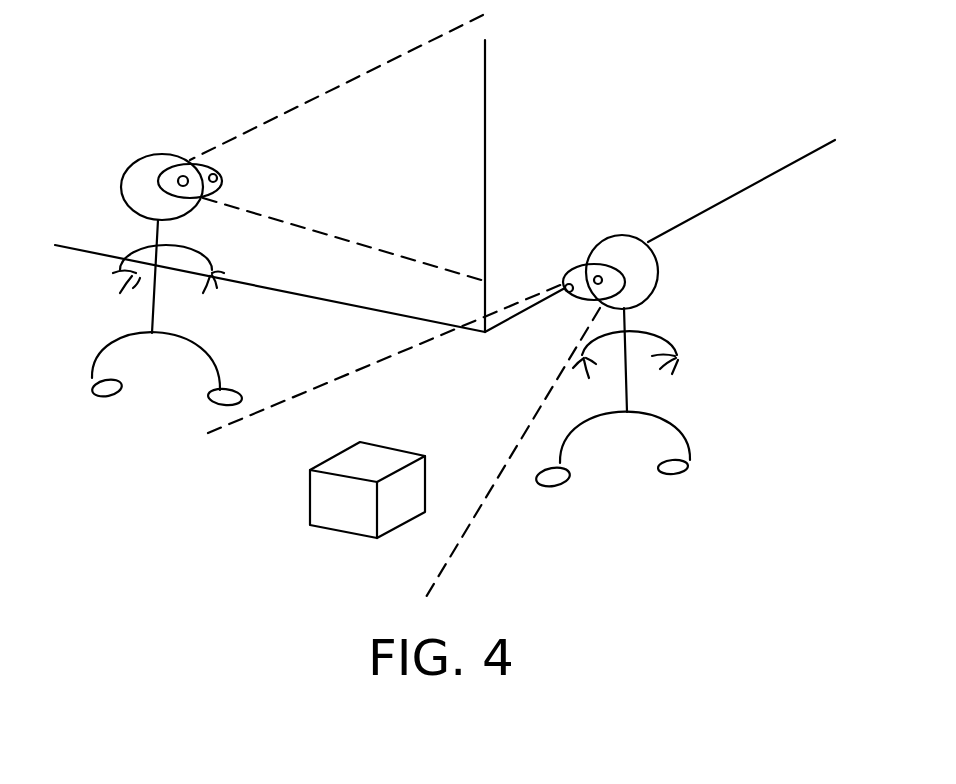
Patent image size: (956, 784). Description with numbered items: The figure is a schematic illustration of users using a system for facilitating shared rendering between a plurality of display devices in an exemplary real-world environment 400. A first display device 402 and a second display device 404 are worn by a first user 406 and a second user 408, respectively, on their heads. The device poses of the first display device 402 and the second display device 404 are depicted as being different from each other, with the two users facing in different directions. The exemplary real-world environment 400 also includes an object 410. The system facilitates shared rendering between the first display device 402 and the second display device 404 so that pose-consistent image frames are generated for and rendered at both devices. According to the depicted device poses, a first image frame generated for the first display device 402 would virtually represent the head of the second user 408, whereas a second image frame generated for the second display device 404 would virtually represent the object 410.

The exemplary real-world environment 400 is at (690, 45).
The first display device 402 is at (222, 178).
The second display device 404 is at (625, 292).
The first user 406 is at (127, 167).
The second user 408 is at (658, 260).
The object 410 is at (330, 530).